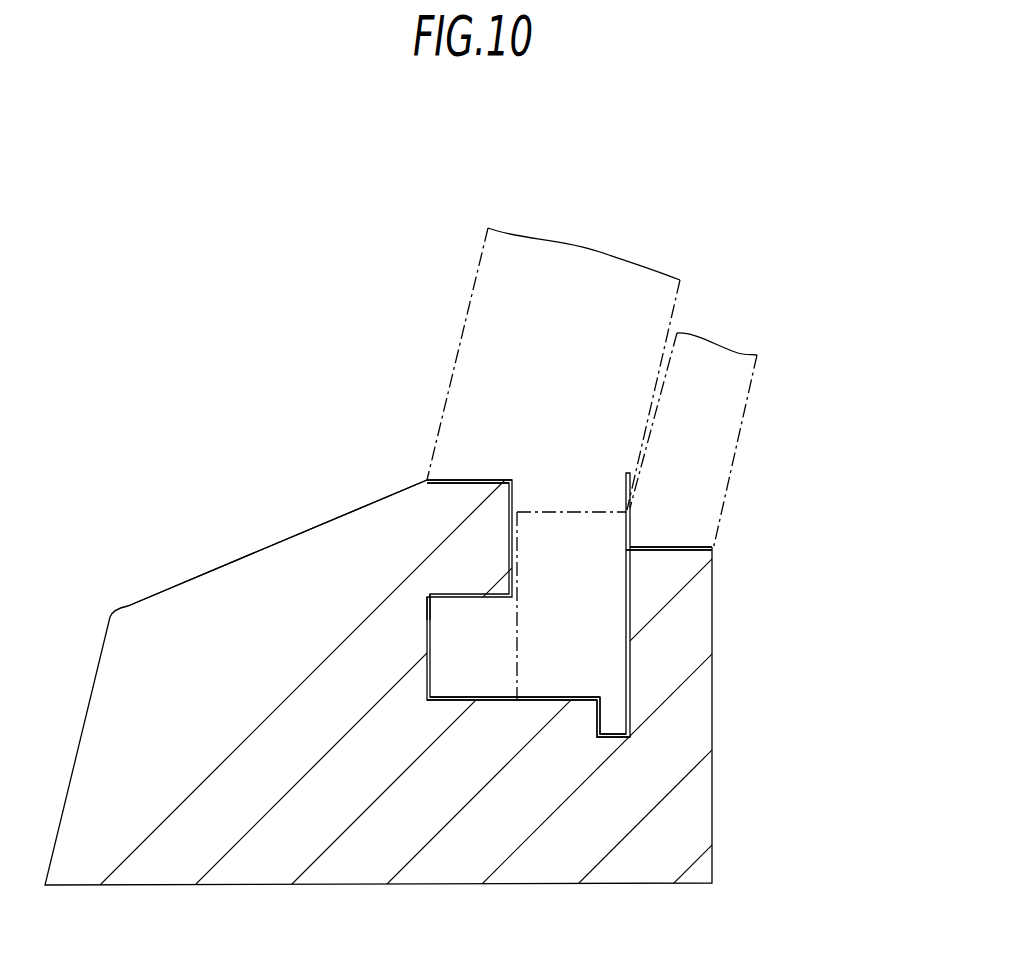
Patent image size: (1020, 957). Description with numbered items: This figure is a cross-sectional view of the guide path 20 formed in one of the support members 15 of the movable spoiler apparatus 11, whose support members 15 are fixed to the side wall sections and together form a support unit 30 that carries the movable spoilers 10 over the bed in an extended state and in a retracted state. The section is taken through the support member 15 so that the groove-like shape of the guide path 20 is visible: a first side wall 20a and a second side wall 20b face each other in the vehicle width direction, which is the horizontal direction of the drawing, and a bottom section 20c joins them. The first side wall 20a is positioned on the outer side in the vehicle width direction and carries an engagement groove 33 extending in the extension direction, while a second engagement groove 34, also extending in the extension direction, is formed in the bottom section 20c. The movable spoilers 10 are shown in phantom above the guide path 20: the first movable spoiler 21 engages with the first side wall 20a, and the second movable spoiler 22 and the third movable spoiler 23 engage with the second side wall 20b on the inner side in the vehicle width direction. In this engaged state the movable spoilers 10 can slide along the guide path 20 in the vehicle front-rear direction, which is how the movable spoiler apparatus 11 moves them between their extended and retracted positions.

The movable spoiler 10 is at (626, 389).
The first movable spoiler 21 is at (480, 278).
The second movable spoiler 22 is at (772, 441).
The third movable spoiler 23 is at (743, 417).
The movable spoiler apparatus 11 is at (510, 478).
The support unit 30 is at (287, 402).
The support member 15 is at (186, 577).
The guide path 20 is at (603, 540).
The first side wall 20a is at (470, 485).
The second side wall 20b is at (683, 560).
The bottom section 20c is at (506, 708).
The engagement groove 33 is at (434, 620).
The engagement groove 34 is at (600, 718).